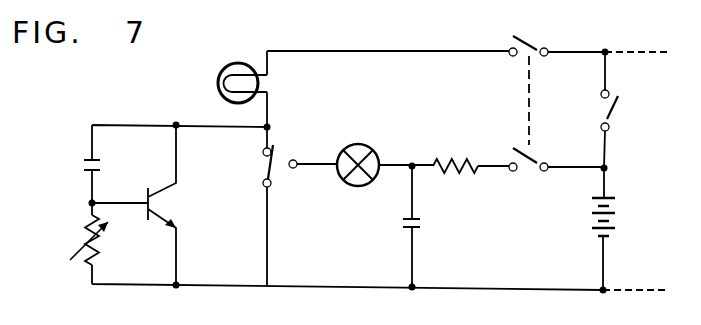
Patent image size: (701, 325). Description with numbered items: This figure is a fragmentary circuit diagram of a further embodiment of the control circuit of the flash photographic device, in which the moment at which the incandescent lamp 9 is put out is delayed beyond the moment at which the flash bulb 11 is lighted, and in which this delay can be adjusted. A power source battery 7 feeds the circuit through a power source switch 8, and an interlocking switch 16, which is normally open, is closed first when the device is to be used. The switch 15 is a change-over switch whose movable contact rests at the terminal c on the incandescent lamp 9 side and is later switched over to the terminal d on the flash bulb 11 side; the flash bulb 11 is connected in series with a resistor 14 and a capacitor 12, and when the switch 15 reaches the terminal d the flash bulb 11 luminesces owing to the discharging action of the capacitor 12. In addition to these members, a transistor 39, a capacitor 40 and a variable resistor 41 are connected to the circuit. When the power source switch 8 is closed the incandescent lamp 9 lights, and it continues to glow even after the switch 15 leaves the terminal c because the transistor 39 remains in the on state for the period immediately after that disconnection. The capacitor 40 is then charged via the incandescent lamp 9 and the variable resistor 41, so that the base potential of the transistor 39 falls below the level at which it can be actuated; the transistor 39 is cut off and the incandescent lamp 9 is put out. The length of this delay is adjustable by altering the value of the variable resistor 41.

The power source battery 7 is at (612, 197).
The power source switch 8 is at (618, 104).
The incandescent lamp 9 is at (217, 80).
The flash bulb 11 is at (355, 144).
The capacitor 12 is at (401, 221).
The resistor 14 is at (455, 172).
The switch 15 is at (265, 169).
The interlocking switch 16 is at (528, 105).
The transistor 39 is at (151, 206).
The capacitor 40 is at (83, 160).
The variable resistor 41 is at (85, 230).
The terminal C c is at (263, 150).
The terminal d is at (294, 159).